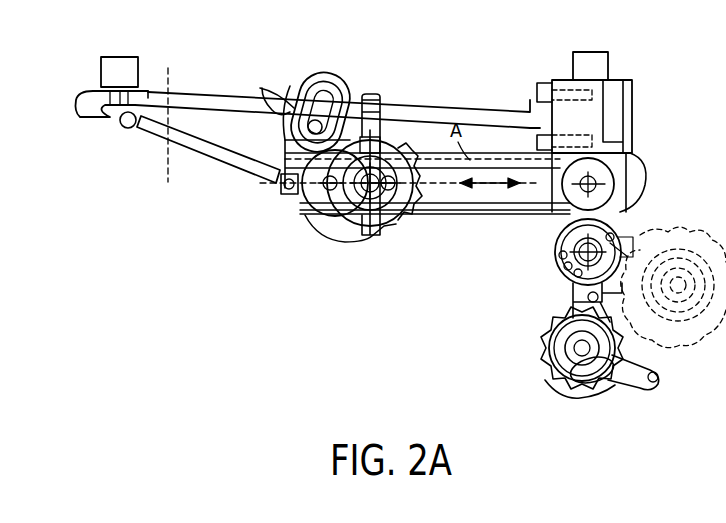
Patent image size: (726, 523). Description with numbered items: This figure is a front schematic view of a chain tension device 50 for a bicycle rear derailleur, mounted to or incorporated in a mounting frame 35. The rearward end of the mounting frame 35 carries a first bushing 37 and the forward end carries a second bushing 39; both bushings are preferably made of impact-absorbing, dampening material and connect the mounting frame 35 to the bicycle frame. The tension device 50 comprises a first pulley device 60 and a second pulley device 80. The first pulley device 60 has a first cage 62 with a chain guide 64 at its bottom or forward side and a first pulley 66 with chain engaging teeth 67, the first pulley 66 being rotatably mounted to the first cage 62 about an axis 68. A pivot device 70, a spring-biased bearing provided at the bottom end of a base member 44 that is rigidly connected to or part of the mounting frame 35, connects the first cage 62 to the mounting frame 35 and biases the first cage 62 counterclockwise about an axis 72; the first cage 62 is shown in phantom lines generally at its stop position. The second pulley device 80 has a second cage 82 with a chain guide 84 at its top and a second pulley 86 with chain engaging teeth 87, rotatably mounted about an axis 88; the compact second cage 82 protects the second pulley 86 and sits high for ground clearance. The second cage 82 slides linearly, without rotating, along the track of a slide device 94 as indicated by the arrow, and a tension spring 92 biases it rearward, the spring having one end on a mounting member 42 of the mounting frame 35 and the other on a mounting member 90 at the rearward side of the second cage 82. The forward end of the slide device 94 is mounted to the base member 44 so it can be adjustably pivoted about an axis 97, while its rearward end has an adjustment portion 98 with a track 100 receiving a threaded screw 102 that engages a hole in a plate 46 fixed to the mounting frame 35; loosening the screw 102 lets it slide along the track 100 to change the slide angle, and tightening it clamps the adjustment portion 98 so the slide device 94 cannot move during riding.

The mounting frame 35 is at (443, 104).
The first bushing 37 is at (138, 60).
The second bushing 39 is at (600, 52).
The mounting member 42 is at (125, 112).
The base member 44 is at (632, 95).
The plate 46 is at (290, 108).
The tension device 50 is at (230, 340).
The first pulley device 60 is at (518, 377).
The first cage 62 is at (590, 398).
The chain guide 64 is at (660, 375).
The first pulley 66 is at (545, 325).
The chain engaging teeth 67 is at (535, 355).
The axis 68 is at (584, 348).
The pivot device 70 is at (622, 220).
The axis 72 is at (598, 248).
The second pulley device 80 is at (290, 245).
The second cage 82 is at (320, 214).
The chain guide 84 is at (372, 95).
The second pulley 86 is at (392, 225).
The chain engaging teeth 87 is at (410, 210).
The axis 88 is at (352, 224).
The mounting member 90 is at (283, 186).
The tension spring 92 is at (210, 165).
The slide device 94 is at (530, 218).
The axis 97 is at (600, 183).
The adjustment portion 98 is at (283, 140).
The track 100 is at (330, 98).
The threaded screw 102 is at (303, 96).